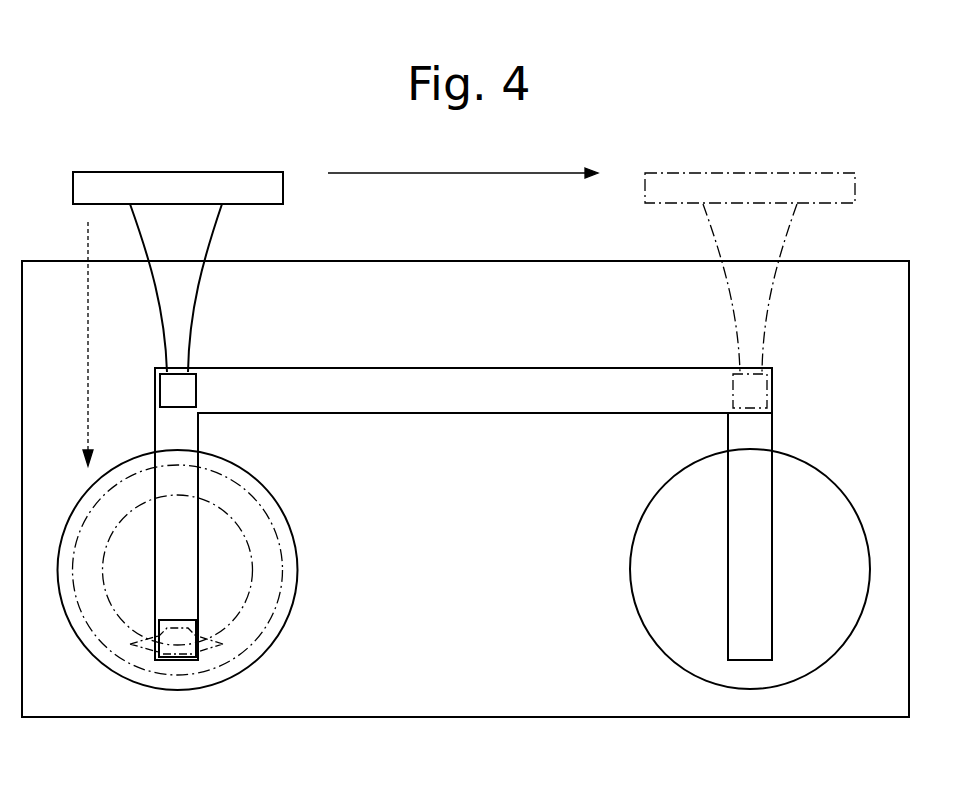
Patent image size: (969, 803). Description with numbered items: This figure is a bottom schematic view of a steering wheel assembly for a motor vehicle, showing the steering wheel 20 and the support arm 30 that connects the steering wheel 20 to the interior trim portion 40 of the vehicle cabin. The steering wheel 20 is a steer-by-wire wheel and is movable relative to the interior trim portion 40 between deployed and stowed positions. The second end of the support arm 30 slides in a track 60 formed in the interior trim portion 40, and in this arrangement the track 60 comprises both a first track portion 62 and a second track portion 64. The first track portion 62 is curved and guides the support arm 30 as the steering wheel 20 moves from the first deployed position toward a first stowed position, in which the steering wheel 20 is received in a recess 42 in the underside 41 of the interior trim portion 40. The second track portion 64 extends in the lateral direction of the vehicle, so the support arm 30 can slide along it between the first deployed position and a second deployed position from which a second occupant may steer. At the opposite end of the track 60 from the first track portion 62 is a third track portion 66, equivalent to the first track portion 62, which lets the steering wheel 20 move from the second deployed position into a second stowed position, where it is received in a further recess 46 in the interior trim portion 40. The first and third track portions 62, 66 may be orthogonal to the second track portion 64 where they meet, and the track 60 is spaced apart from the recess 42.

The steering wheel 20 is at (138, 188).
The support arm 30 is at (197, 217).
The interior trim portion 40 is at (573, 262).
The underside 41 is at (313, 290).
The recess 42 is at (247, 658).
The recess 46 is at (698, 658).
The track 60 is at (366, 368).
The first track portion 62 is at (185, 572).
The second track portion 64 is at (463, 392).
The third track portion 66 is at (752, 547).